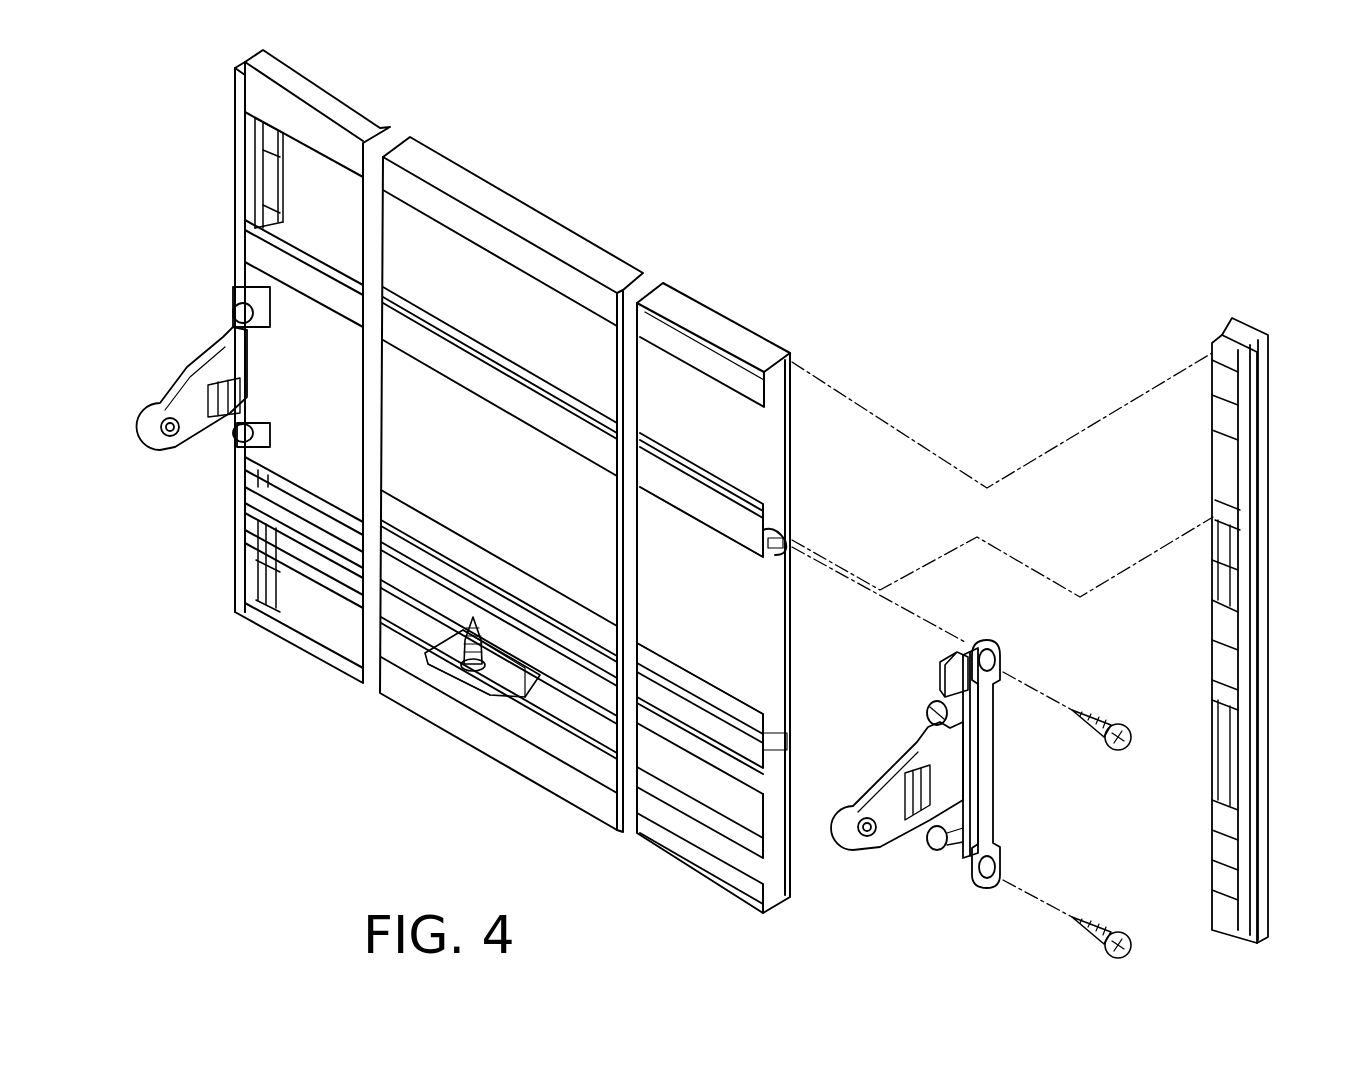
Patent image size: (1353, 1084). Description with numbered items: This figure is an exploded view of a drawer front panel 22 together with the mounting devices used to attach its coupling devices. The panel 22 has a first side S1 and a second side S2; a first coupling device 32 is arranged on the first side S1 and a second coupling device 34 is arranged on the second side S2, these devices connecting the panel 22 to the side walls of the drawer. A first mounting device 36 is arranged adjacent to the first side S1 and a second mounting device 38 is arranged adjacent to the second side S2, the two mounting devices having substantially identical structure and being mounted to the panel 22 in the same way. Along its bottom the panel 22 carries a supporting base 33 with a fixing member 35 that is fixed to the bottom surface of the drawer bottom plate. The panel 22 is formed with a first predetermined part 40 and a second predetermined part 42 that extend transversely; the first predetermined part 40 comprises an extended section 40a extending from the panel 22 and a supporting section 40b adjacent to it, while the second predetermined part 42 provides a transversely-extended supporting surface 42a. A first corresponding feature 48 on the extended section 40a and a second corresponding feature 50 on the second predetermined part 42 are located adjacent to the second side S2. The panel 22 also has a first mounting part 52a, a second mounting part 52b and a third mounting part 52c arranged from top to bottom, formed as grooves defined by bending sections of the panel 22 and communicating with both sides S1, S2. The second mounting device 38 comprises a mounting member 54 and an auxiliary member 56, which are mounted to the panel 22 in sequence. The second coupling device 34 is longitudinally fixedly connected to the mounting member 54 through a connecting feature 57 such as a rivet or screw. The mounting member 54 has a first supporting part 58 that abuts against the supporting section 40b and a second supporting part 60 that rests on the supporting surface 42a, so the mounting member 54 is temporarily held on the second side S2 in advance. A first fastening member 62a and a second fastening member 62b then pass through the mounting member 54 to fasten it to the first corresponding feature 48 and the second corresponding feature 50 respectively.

The first side S1 is at (265, 362).
The second side S2 is at (767, 610).
The panel 22 is at (467, 447).
The first coupling device 32 is at (169, 452).
The supporting base 33 is at (487, 678).
The second coupling device 34 is at (886, 832).
The fixing member 35 is at (458, 637).
The first mounting device 36 is at (224, 203).
The second mounting device 38 is at (937, 762).
The first predetermined part 40 is at (768, 539).
The extended section 40a is at (770, 533).
The supporting section 40b is at (748, 547).
The second predetermined part 42 is at (760, 718).
The supporting surface 42a is at (761, 725).
The first corresponding feature 48 is at (788, 537).
The second corresponding feature 50 is at (795, 735).
The first mounting part 52a is at (770, 378).
The second mounting part 52b is at (768, 814).
The third mounting part 52c is at (767, 889).
The mounting member 54 is at (973, 642).
The auxiliary member 56 is at (1220, 321).
The connecting feature 57 is at (932, 707).
The first supporting part 58 is at (945, 660).
The second supporting part 60 is at (978, 847).
The first fastening member 62a is at (1110, 710).
The second fastening member 62b is at (1110, 917).